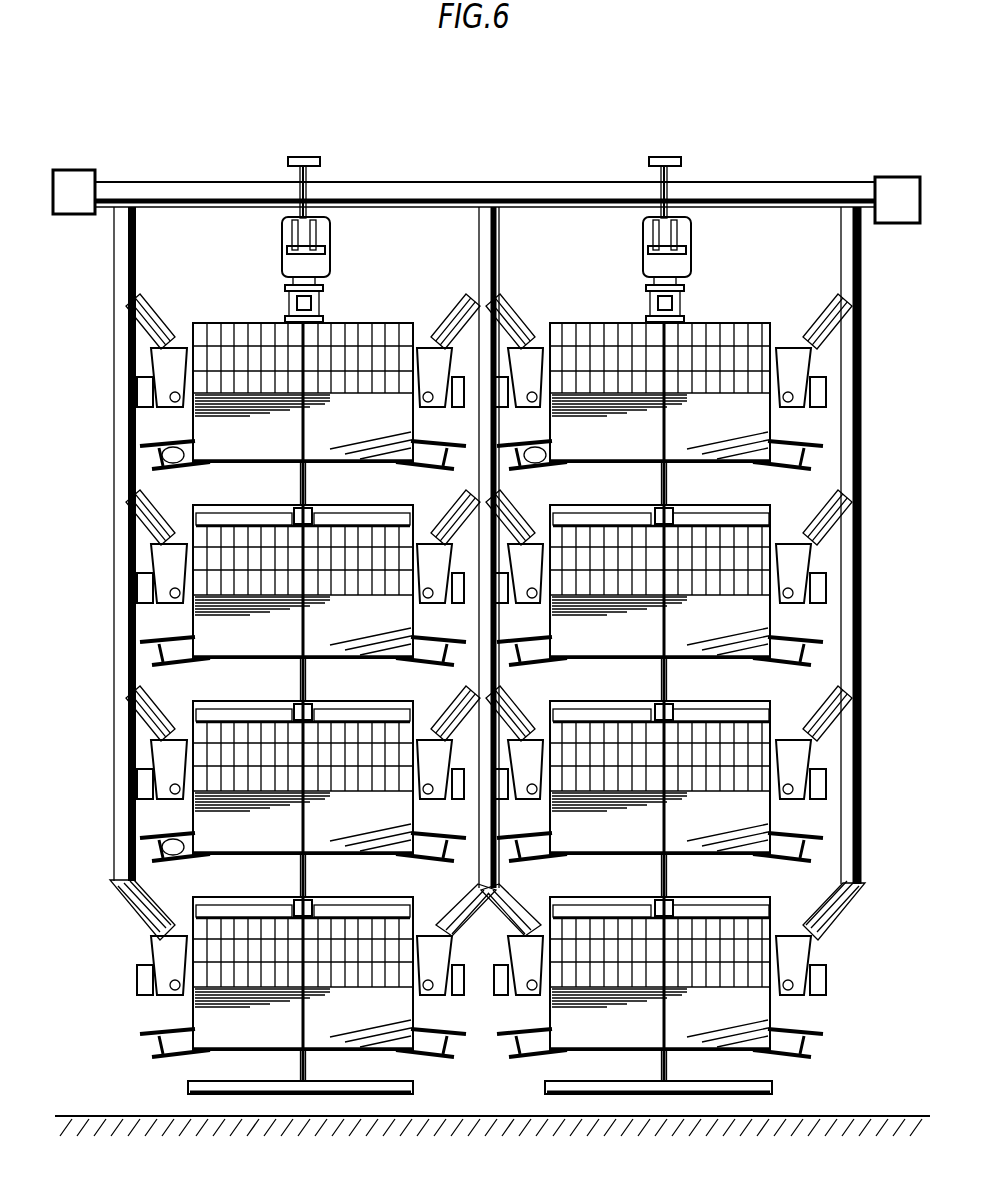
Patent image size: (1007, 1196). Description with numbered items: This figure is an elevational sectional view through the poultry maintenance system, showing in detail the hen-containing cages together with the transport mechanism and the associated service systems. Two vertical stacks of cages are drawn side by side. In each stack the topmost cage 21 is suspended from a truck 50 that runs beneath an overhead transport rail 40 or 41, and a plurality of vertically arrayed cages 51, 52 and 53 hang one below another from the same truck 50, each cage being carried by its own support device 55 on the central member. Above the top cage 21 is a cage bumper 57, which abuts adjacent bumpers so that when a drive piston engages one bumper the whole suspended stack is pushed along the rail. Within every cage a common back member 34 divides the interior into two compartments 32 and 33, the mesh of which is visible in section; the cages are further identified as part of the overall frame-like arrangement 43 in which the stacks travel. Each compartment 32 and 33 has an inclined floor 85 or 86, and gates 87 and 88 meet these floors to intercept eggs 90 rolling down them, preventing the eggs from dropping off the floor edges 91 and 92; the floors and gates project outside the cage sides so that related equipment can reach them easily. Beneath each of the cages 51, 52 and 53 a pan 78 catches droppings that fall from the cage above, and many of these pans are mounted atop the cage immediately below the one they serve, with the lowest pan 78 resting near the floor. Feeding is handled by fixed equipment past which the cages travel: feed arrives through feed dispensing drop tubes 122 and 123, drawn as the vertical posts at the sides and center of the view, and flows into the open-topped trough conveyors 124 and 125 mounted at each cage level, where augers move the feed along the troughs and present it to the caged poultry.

The cage 21 is at (322, 433).
The compartment 32 is at (241, 356).
The compartment 33 is at (369, 356).
The common back member 34 is at (306, 340).
The transport rail 40 is at (319, 162).
The transport rail 41 is at (686, 162).
The frame 43 is at (88, 516).
The truck 50 is at (323, 253).
The cage 51 is at (305, 646).
The cage 52 is at (305, 839).
The cage 53 is at (305, 1029).
The support device 55 is at (312, 488).
The cage bumper 57 is at (290, 300).
The pan 78 is at (226, 712).
The inclined floor 85 is at (200, 468).
The inclined floor 86 is at (416, 466).
The gate 87 is at (150, 470).
The gate 88 is at (452, 470).
The egg 90 is at (182, 452).
The floor edge 91 is at (447, 1062).
The floor edge 92 is at (163, 668).
The feed dispensing drop tube 122 is at (480, 246).
The feed dispensing drop tube 123 is at (126, 277).
The trough conveyor 124 is at (445, 352).
The trough conveyor 125 is at (526, 356).